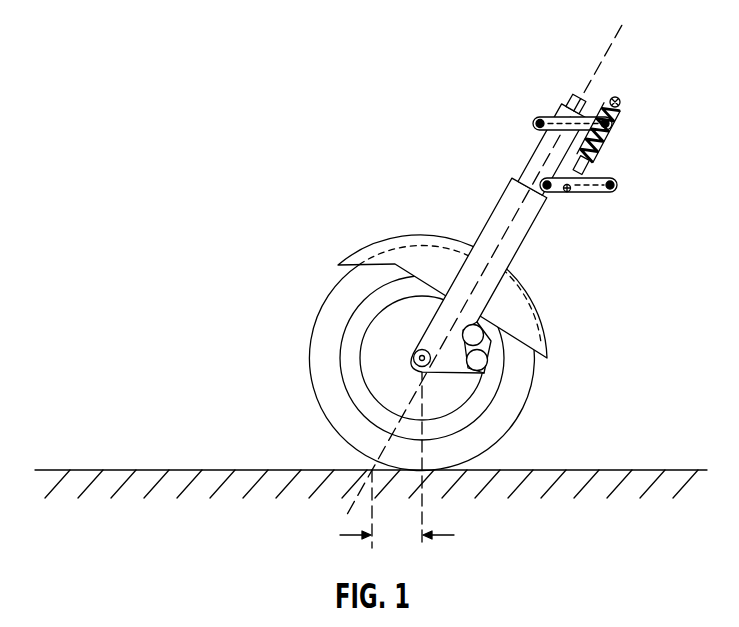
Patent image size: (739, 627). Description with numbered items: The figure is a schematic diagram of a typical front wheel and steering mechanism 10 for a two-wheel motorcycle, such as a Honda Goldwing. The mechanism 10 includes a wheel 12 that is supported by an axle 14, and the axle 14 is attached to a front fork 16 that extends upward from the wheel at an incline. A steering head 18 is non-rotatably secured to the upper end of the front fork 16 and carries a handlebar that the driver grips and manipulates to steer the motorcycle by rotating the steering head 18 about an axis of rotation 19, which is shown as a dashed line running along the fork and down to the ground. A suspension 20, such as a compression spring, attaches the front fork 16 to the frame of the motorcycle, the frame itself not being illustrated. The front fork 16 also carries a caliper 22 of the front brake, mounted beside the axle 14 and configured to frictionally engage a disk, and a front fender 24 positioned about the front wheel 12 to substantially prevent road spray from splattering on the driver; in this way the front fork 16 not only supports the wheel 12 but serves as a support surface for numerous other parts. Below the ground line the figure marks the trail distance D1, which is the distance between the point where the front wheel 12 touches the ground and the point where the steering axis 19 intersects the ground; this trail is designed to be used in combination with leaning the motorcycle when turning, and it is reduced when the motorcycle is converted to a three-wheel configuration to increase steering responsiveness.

The front wheel steering mechanism 10 is at (371, 286).
The wheel 12 is at (309, 360).
The axle 14 is at (413, 362).
The front fork 16 is at (491, 213).
The steering head 18 is at (537, 148).
The axis of rotation 19 is at (611, 47).
The suspension 20 is at (616, 138).
The caliper 22 is at (486, 357).
The front fender 24 is at (536, 307).
The trail distance D1 is at (397, 535).